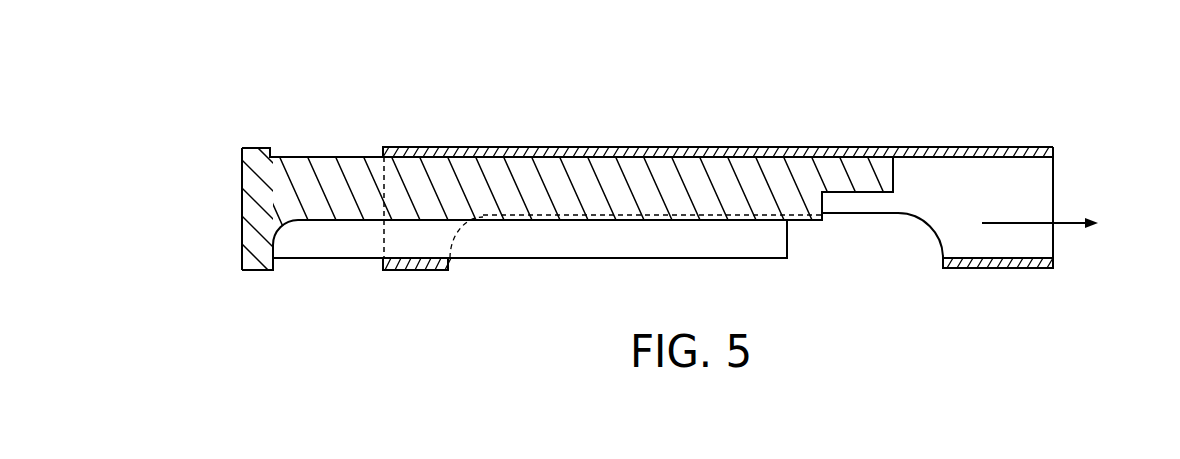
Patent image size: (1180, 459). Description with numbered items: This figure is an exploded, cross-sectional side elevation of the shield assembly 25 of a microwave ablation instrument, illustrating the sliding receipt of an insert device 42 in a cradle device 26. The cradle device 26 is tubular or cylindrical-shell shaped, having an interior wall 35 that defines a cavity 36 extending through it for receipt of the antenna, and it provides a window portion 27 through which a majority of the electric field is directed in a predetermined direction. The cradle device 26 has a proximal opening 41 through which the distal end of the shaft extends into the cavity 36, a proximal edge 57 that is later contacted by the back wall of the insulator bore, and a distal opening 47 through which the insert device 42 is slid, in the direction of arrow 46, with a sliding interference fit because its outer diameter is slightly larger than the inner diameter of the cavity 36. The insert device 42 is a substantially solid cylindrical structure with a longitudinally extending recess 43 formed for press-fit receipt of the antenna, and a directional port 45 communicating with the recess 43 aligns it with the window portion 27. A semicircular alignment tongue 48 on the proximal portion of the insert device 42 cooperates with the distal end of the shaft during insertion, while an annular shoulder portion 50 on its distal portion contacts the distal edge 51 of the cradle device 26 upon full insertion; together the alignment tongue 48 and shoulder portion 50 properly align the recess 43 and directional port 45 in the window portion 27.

The shield assembly 25 is at (540, 110).
The cradle device 26 is at (745, 144).
The window portion 27 is at (898, 214).
The interior wall 35 is at (963, 155).
The cavity 36 is at (962, 204).
The proximal opening 41 is at (1036, 258).
The insert device 42 is at (311, 152).
The recess 43 is at (342, 220).
The directional port 45 is at (290, 258).
The arrow 46 is at (1073, 217).
The distal opening 47 is at (385, 171).
The alignment tongue 48 is at (892, 167).
The annular shoulder portion 50 is at (273, 156).
The distal edge 51 is at (402, 160).
The proximal edge 57 is at (1053, 147).